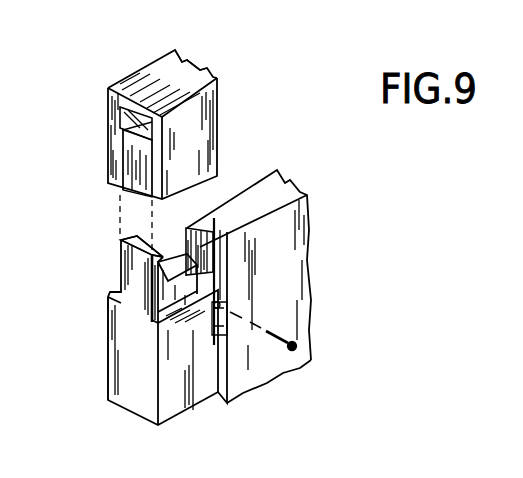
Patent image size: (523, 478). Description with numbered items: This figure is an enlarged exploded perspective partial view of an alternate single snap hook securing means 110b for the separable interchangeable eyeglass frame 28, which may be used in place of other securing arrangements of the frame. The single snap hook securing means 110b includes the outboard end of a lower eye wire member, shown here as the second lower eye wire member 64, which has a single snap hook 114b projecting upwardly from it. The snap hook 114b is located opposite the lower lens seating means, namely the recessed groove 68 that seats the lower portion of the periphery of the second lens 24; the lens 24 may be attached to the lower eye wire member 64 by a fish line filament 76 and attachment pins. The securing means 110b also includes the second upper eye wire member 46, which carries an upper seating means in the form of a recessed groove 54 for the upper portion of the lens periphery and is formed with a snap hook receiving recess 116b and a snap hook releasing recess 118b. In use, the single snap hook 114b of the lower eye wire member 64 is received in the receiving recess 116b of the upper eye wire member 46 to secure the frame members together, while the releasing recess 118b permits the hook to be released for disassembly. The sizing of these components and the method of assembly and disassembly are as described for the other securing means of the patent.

The second lens 24 is at (275, 200).
The eyeglass frame 28 is at (190, 228).
The second upper eye wire member 46 is at (135, 90).
The recessed groove 54 is at (198, 66).
The second lower eye wire member 64 is at (205, 380).
The recessed groove 68 is at (192, 266).
The fish line filament 76 is at (213, 231).
The single snap hook securing means 110b is at (107, 308).
The single snap hook 114b is at (135, 288).
The snap hook receiving recess 116b is at (135, 132).
The snap hook releasing recess 118b is at (132, 123).